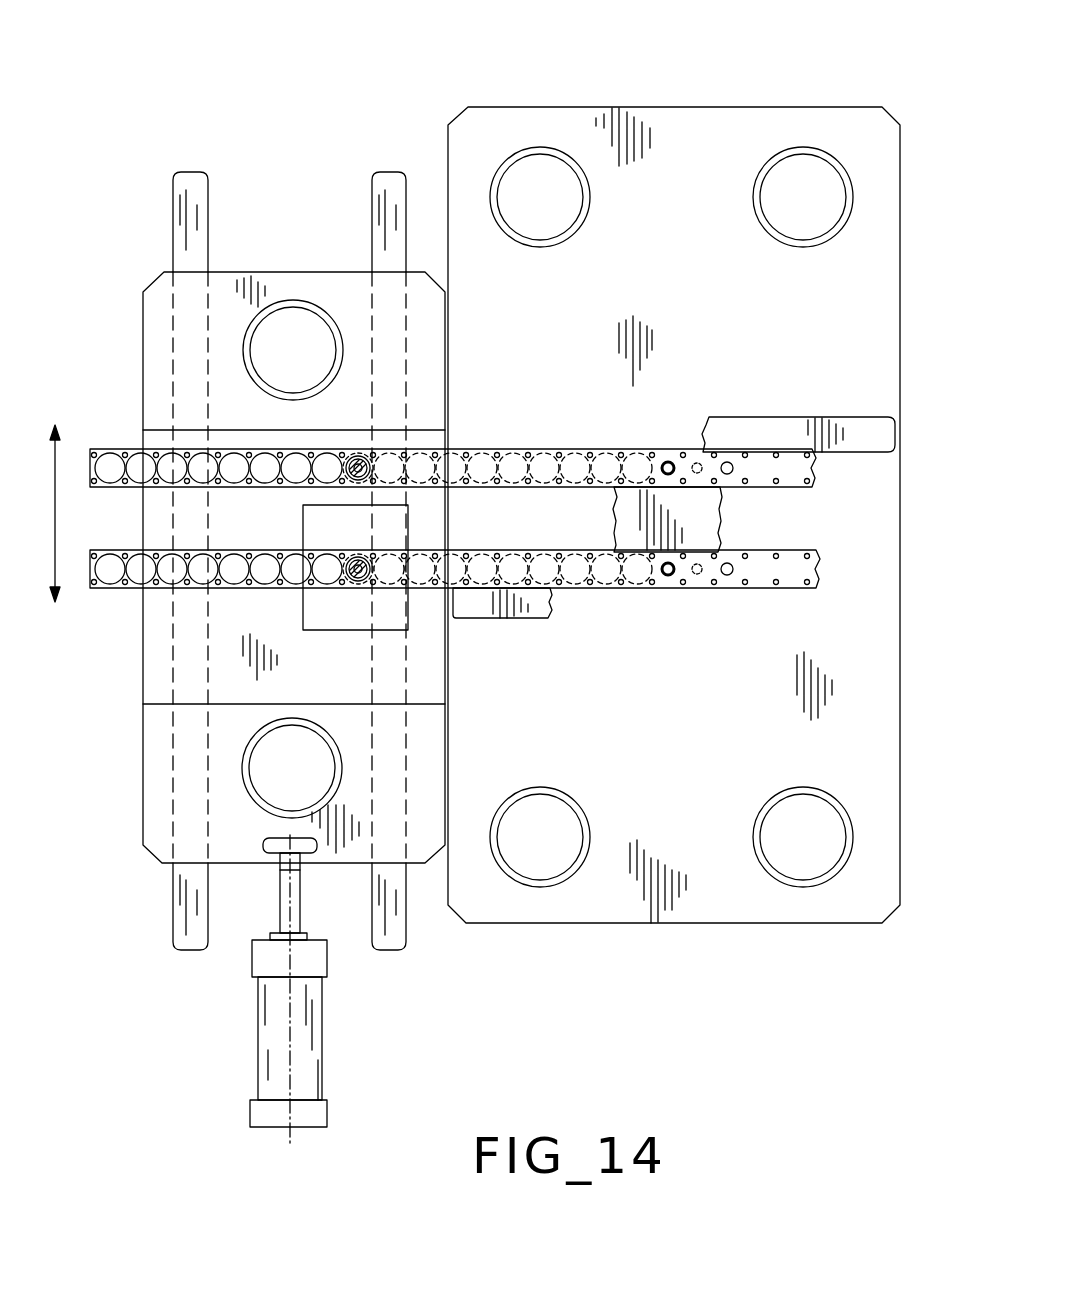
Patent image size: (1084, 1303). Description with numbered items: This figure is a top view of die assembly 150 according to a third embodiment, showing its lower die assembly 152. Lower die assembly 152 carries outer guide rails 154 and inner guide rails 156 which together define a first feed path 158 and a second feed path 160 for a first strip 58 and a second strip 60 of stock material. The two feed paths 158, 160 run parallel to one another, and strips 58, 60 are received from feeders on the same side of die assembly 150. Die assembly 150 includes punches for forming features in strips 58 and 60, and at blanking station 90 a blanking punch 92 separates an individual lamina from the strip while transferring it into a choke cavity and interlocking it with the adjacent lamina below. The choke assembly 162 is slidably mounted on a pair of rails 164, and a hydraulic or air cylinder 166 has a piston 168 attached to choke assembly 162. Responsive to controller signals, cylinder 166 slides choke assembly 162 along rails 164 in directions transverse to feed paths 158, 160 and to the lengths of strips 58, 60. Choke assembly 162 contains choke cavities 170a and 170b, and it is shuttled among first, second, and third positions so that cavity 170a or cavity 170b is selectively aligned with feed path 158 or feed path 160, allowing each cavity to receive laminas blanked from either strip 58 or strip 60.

The die assembly 150 is at (665, 76).
The lower die assembly 152 is at (768, 314).
The outer guide rails 154 is at (856, 430).
The inner guide rails 156 is at (700, 517).
The first strip 58 is at (790, 572).
The second strip 60 is at (757, 465).
The blanking station 90 is at (366, 452).
The blanking punch 92 is at (356, 552).
The first feed path 158 is at (674, 608).
The second feed path 160 is at (592, 432).
The choke assembly 162 is at (278, 188).
The rails 164 is at (176, 185).
The cylinder 166 is at (305, 1010).
The piston 168 is at (282, 907).
The choke cavity 170a is at (354, 590).
The choke cavity 170b is at (352, 452).